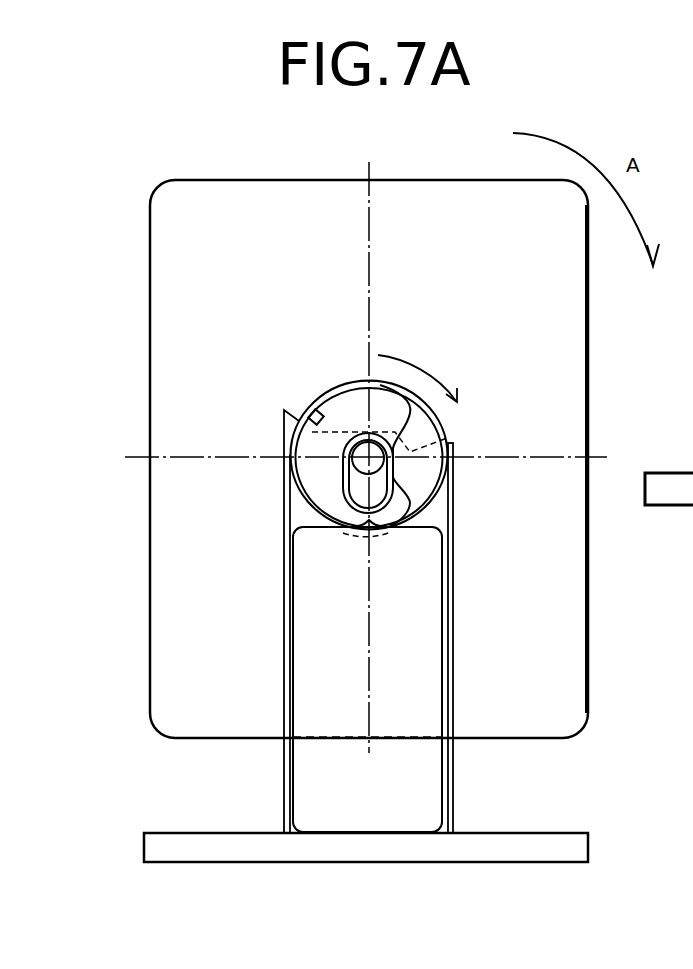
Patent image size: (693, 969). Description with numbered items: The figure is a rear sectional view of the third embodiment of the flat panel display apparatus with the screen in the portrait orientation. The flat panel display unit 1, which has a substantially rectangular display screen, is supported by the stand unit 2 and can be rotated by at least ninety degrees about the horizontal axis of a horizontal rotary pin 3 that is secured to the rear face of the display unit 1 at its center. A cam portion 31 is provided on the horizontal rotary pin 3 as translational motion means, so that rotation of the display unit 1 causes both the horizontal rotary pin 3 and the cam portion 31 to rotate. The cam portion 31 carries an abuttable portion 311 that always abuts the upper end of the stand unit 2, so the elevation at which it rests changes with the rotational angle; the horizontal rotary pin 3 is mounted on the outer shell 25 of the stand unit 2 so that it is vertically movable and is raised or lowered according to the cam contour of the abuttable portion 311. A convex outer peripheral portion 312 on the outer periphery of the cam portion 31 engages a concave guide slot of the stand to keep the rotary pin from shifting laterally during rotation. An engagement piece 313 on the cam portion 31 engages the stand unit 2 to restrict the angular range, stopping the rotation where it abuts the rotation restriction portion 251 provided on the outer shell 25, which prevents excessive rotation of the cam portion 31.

The flat panel display unit 1 is at (339, 197).
The stand unit 2 is at (473, 852).
The horizontal rotary pin 3 is at (374, 453).
The outer shell 25 is at (283, 606).
The rotation restriction portion 251 is at (288, 419).
The cam portion 31 is at (410, 355).
The abuttable portion 311 is at (399, 507).
The convex outer peripheral portion 312 is at (441, 423).
The engagement piece 313 is at (313, 411).